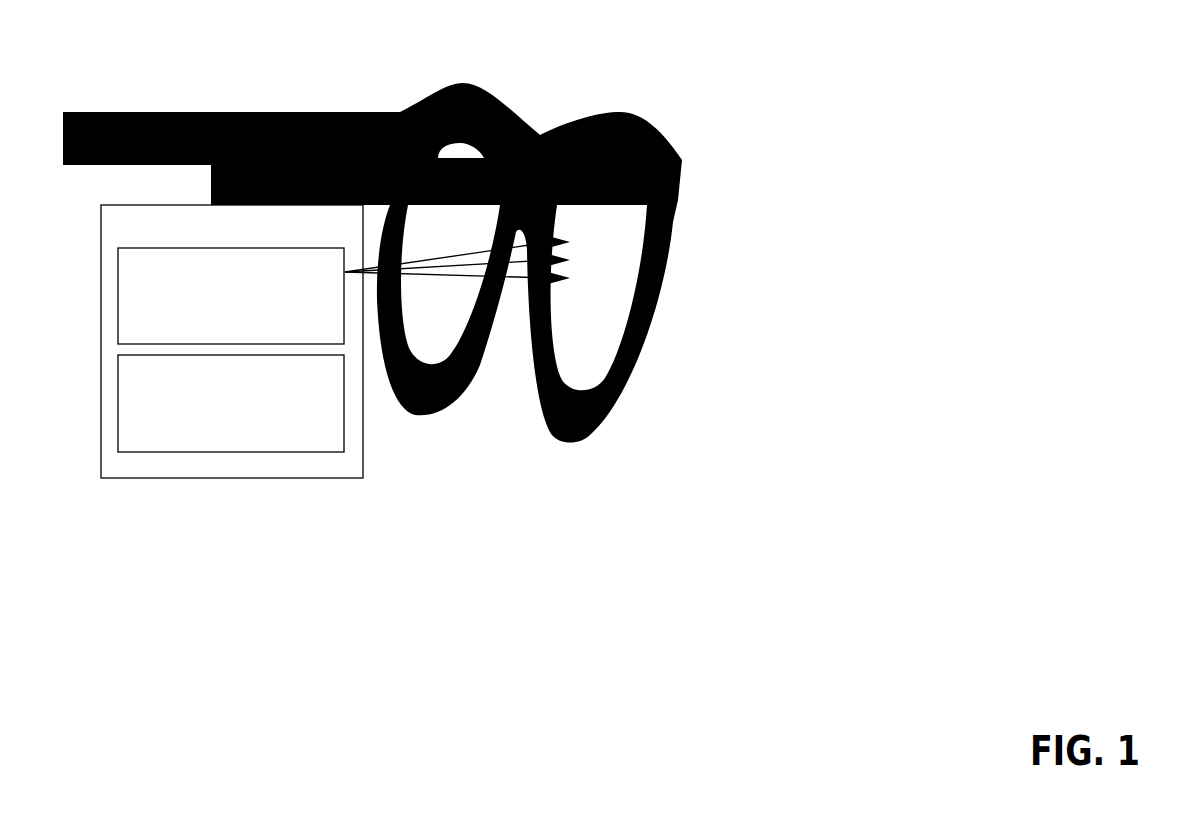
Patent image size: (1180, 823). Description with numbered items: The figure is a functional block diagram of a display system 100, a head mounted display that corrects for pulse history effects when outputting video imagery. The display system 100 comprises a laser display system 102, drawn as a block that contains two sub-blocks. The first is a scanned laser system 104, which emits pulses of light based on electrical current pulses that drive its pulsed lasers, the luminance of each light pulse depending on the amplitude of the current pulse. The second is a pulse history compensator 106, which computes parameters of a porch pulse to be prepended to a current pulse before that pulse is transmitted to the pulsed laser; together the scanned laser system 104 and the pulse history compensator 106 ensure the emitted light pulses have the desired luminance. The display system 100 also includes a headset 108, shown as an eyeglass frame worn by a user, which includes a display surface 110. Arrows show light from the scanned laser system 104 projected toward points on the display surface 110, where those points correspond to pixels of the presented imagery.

The display system 100 is at (829, 56).
The laser display system 102 is at (357, 476).
The scanned laser system 104 is at (338, 343).
The pulse history compensator 106 is at (338, 450).
The headset 108 is at (648, 120).
The display surface 110 is at (608, 356).